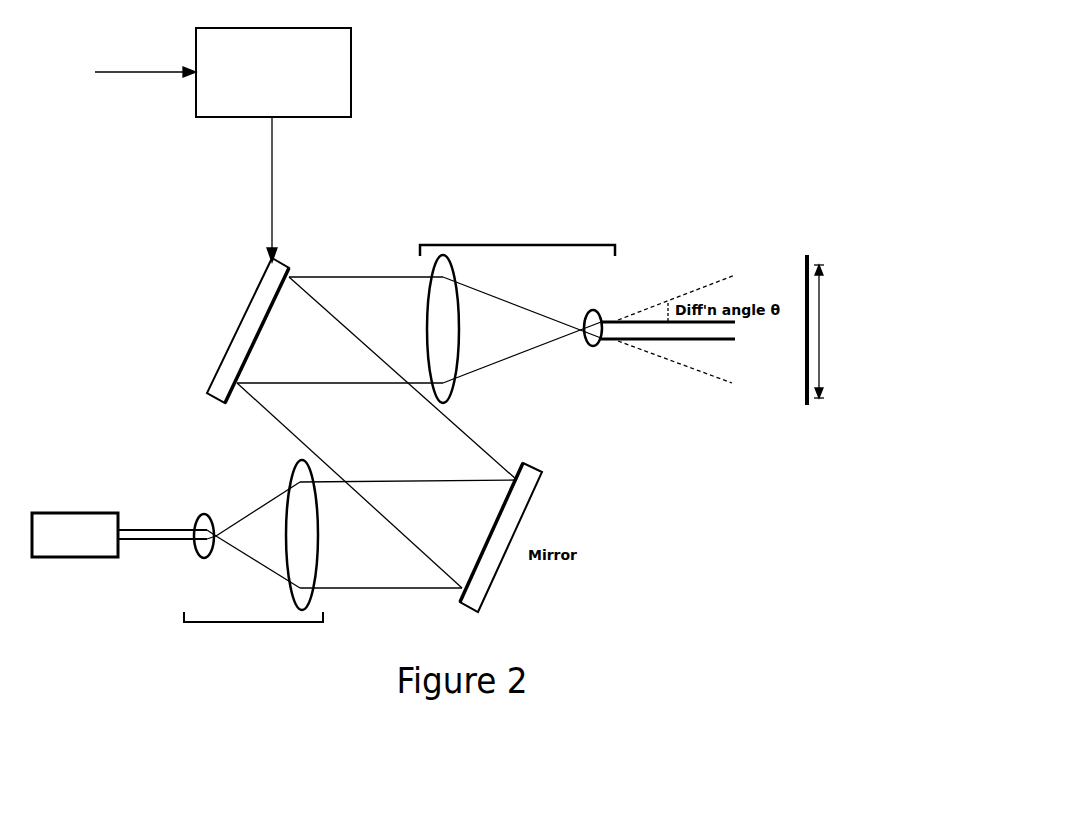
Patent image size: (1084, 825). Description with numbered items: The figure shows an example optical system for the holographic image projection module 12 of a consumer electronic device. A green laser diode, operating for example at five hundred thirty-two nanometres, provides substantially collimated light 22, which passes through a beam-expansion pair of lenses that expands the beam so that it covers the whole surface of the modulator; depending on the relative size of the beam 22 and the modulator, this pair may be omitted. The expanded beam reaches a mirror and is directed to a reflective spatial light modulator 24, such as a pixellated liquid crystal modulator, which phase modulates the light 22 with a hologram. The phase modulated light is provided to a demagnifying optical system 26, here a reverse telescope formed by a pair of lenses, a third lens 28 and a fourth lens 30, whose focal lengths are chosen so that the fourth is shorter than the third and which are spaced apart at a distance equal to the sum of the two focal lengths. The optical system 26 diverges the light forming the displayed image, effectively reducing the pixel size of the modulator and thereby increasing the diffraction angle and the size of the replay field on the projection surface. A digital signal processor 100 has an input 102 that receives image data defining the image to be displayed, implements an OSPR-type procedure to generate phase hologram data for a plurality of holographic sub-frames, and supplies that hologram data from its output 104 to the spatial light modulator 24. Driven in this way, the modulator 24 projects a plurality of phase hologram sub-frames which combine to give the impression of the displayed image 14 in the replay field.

The digital signal processor 100 is at (352, 73).
The input 102 is at (147, 73).
The output 104 is at (270, 205).
The spatial light modulator 24 is at (257, 275).
The demagnifying optical system 26 is at (546, 398).
The lens L3 28 is at (427, 272).
The lens L4 30 is at (597, 353).
The displayed image 14 is at (805, 265).
The holographic image projection module 12 is at (86, 513).
The substantially collimated light 22 is at (188, 540).